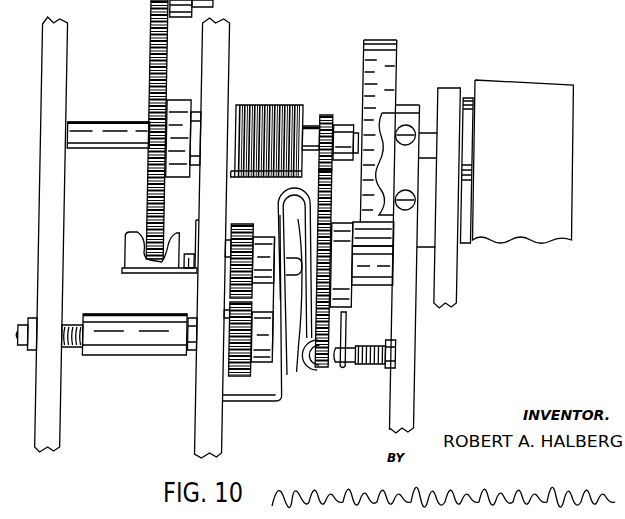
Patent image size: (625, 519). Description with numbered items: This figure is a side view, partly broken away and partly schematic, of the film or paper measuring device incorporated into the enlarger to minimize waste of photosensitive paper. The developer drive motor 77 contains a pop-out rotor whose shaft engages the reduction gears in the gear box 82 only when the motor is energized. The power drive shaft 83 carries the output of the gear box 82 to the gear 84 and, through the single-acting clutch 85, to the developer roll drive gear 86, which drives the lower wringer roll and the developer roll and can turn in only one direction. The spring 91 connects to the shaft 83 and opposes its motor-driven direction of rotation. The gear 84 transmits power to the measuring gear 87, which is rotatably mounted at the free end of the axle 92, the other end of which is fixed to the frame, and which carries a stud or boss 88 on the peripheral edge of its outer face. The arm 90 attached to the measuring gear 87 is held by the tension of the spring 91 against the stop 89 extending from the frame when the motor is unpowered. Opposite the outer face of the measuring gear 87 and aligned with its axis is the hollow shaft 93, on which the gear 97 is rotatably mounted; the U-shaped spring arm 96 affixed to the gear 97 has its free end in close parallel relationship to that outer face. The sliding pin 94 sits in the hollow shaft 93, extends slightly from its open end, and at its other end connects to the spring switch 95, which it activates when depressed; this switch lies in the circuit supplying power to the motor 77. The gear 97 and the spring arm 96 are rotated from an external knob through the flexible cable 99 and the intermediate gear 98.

The developer drive motor 77 is at (552, 102).
The gear box 82 is at (450, 100).
The power drive shaft 83 is at (122, 122).
The gear 84 is at (348, 125).
The single-acting clutch 85 is at (274, 105).
The developer roll drive gear 86 is at (154, 87).
The measuring gear 87 is at (337, 364).
The stud or boss 88 is at (323, 372).
The stop 89 is at (369, 364).
The arm 90 is at (353, 339).
The spring 91 is at (380, 90).
The axle 92 is at (385, 282).
The hollow shaft 93 is at (302, 228).
The sliding pin 94 is at (193, 271).
The spring switch 95 is at (175, 262).
The U-shaped spring arm 96 is at (286, 192).
The gear 97 is at (270, 255).
The intermediate gear 98 is at (276, 348).
The flexible cable 99 is at (79, 347).